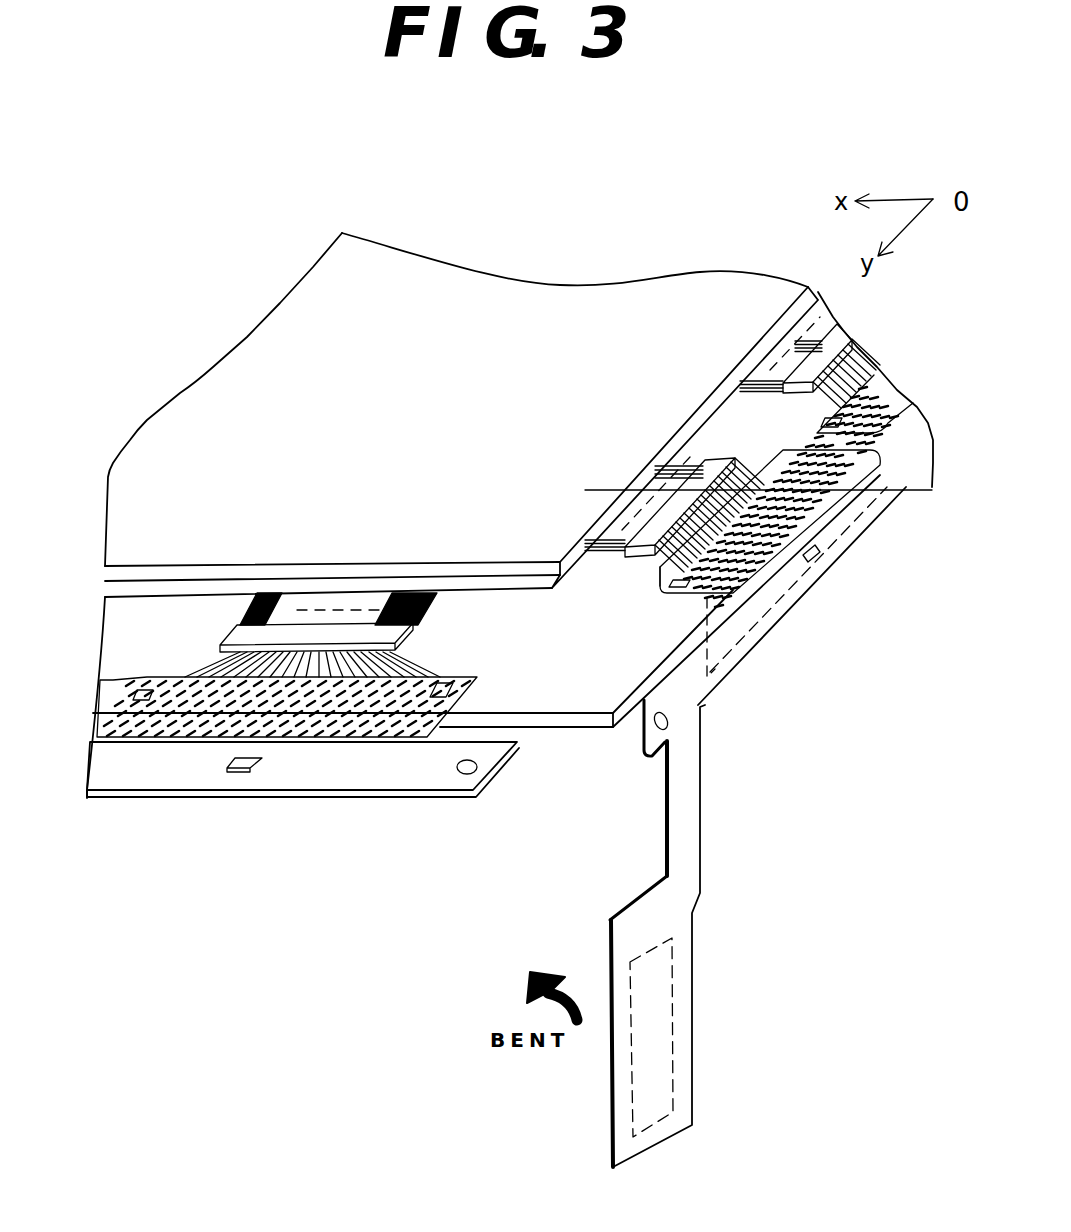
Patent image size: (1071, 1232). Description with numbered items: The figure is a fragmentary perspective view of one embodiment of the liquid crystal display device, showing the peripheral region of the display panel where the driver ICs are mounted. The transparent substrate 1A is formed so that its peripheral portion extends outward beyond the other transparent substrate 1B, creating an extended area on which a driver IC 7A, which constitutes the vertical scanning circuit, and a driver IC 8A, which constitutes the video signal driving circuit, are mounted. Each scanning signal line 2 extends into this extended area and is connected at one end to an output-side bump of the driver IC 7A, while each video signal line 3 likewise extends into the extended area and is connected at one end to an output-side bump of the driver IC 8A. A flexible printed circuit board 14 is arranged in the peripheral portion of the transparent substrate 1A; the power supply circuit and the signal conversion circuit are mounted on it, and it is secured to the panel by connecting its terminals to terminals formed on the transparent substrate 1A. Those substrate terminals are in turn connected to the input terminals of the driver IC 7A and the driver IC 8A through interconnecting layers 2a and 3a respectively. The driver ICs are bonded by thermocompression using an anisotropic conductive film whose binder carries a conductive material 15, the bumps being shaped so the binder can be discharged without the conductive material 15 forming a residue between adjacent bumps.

The transparent substrate 1A is at (580, 700).
The transparent substrate 1B is at (557, 557).
The scanning signal line 2 is at (488, 272).
The interconnecting layer 2a is at (660, 567).
The video signal line 3 is at (428, 607).
The interconnecting layer 3a is at (413, 667).
The driver IC 7A is at (817, 353).
The driver IC 8A is at (328, 633).
The flexible printed circuit board 14 is at (402, 780).
The conductive material 15 is at (123, 708).